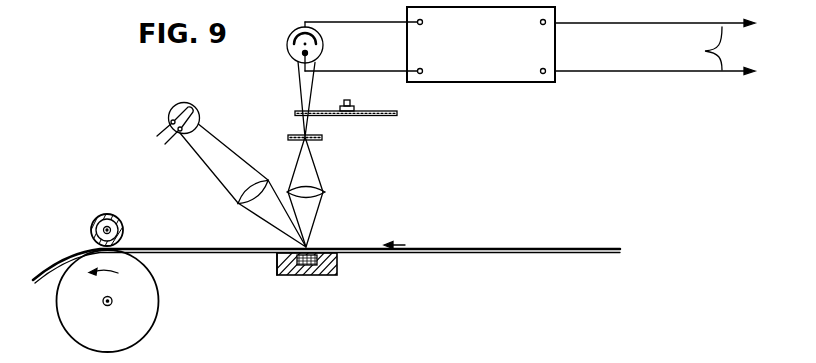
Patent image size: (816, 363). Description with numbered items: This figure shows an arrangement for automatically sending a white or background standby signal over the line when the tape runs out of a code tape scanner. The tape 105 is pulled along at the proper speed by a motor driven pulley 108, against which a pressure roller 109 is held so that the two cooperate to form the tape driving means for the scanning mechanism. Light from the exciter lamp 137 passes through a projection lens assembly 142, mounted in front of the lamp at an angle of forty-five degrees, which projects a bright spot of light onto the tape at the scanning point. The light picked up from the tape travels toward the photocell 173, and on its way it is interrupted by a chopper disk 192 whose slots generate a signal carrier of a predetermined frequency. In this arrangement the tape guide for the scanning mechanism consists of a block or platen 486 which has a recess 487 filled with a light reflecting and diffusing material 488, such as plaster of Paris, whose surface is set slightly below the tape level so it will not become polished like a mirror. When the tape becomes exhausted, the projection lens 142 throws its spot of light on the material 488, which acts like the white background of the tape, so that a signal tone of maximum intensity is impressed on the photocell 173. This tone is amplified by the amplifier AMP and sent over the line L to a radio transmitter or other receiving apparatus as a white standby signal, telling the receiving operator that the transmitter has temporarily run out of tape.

The tape 105 is at (500, 249).
The motor driven pulley 108 is at (150, 298).
The pressure roller 109 is at (97, 217).
The exciter lamp 137 is at (197, 107).
The projection lens assembly 142 is at (247, 193).
The photocell 173 is at (323, 45).
The chopper disk 192 is at (378, 116).
The block or platen 486 is at (321, 278).
The recess 487 is at (308, 276).
The light reflecting and diffusing material 488 is at (277, 259).
The line L is at (705, 48).
The amplifier AMP is at (530, 44).